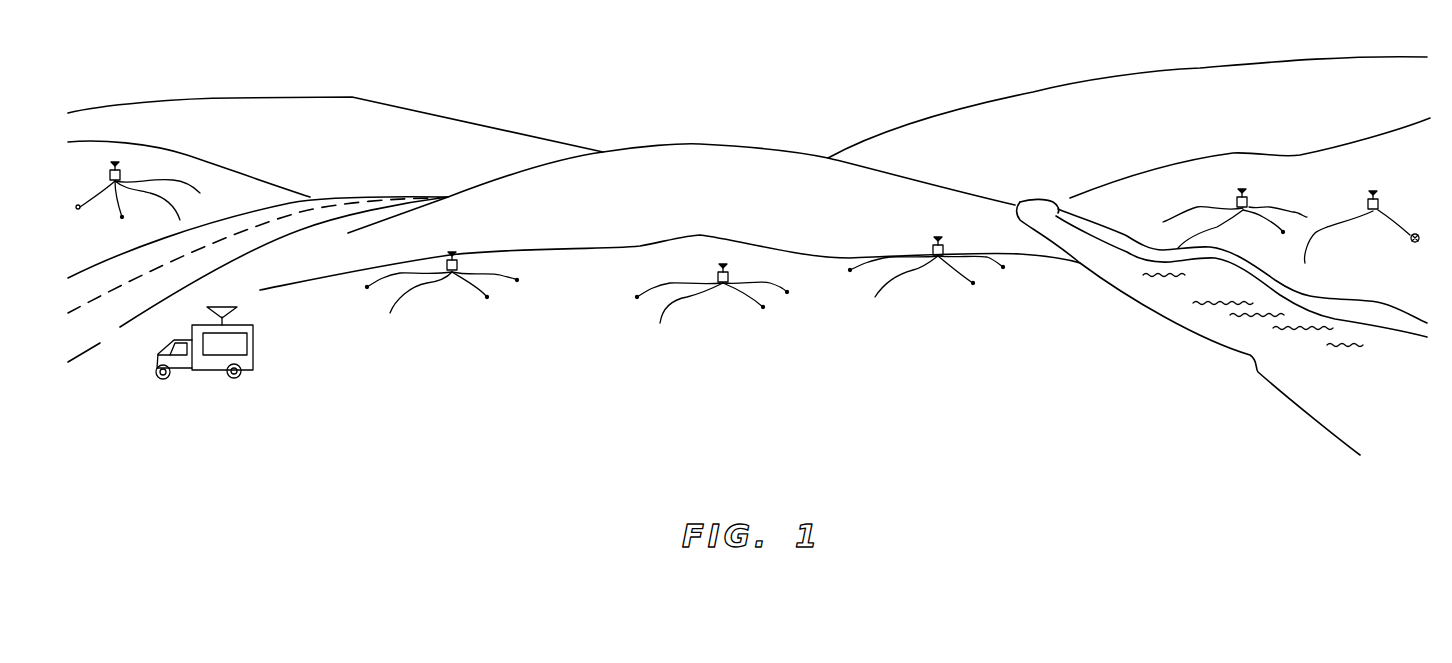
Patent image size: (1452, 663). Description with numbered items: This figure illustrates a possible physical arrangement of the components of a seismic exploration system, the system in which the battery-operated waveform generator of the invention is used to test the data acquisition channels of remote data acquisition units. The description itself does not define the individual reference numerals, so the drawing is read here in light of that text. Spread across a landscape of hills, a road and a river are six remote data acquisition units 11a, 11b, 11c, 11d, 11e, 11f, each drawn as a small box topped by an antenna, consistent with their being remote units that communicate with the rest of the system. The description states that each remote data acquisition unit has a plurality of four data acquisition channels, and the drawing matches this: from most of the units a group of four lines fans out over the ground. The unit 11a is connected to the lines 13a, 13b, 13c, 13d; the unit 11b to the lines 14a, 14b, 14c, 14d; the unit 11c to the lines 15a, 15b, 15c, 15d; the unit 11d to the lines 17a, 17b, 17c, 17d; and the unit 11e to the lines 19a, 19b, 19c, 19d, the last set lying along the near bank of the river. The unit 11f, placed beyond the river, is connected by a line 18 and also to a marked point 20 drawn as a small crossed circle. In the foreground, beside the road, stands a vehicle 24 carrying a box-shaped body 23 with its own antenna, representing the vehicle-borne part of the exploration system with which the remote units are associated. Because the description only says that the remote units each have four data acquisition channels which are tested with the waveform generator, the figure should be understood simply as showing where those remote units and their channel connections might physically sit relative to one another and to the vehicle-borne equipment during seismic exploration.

The data acquisition unit 11a is at (120, 172).
The data acquisition unit 11b is at (457, 261).
The data acquisition unit 11c is at (745, 267).
The data acquisition unit 11d is at (943, 246).
The data acquisition unit 11e is at (1247, 198).
The data acquisition unit 11f is at (1378, 200).
The seismic sensor cable 13a is at (78, 209).
The seismic sensor cable 13b is at (122, 217).
The seismic sensor cable 13c is at (180, 220).
The seismic sensor cable 13d is at (200, 193).
The seismic sensor cable 14a is at (367, 287).
The seismic sensor cable 14b is at (390, 313).
The seismic sensor cable 14c is at (487, 297).
The seismic sensor cable 14d is at (517, 280).
The seismic sensor cable 15a is at (637, 297).
The seismic sensor cable 15b is at (660, 323).
The seismic sensor cable 15c is at (763, 307).
The seismic sensor cable 15d is at (787, 292).
The seismic sensor cable 17a is at (850, 270).
The seismic sensor cable 17b is at (875, 297).
The seismic sensor cable 17c is at (973, 283).
The seismic sensor cable 17d is at (1003, 267).
The sensor cable 18 is at (1305, 263).
The seismic sensor cable 19a is at (1163, 222).
The seismic sensor cable 19b is at (1178, 248).
The seismic sensor cable 19c is at (1283, 232).
The seismic sensor cable 19d is at (1307, 217).
The seismic source / shot point 20 is at (1411, 238).
The central recording station body 23 is at (253, 346).
The recording vehicle 24 is at (216, 353).